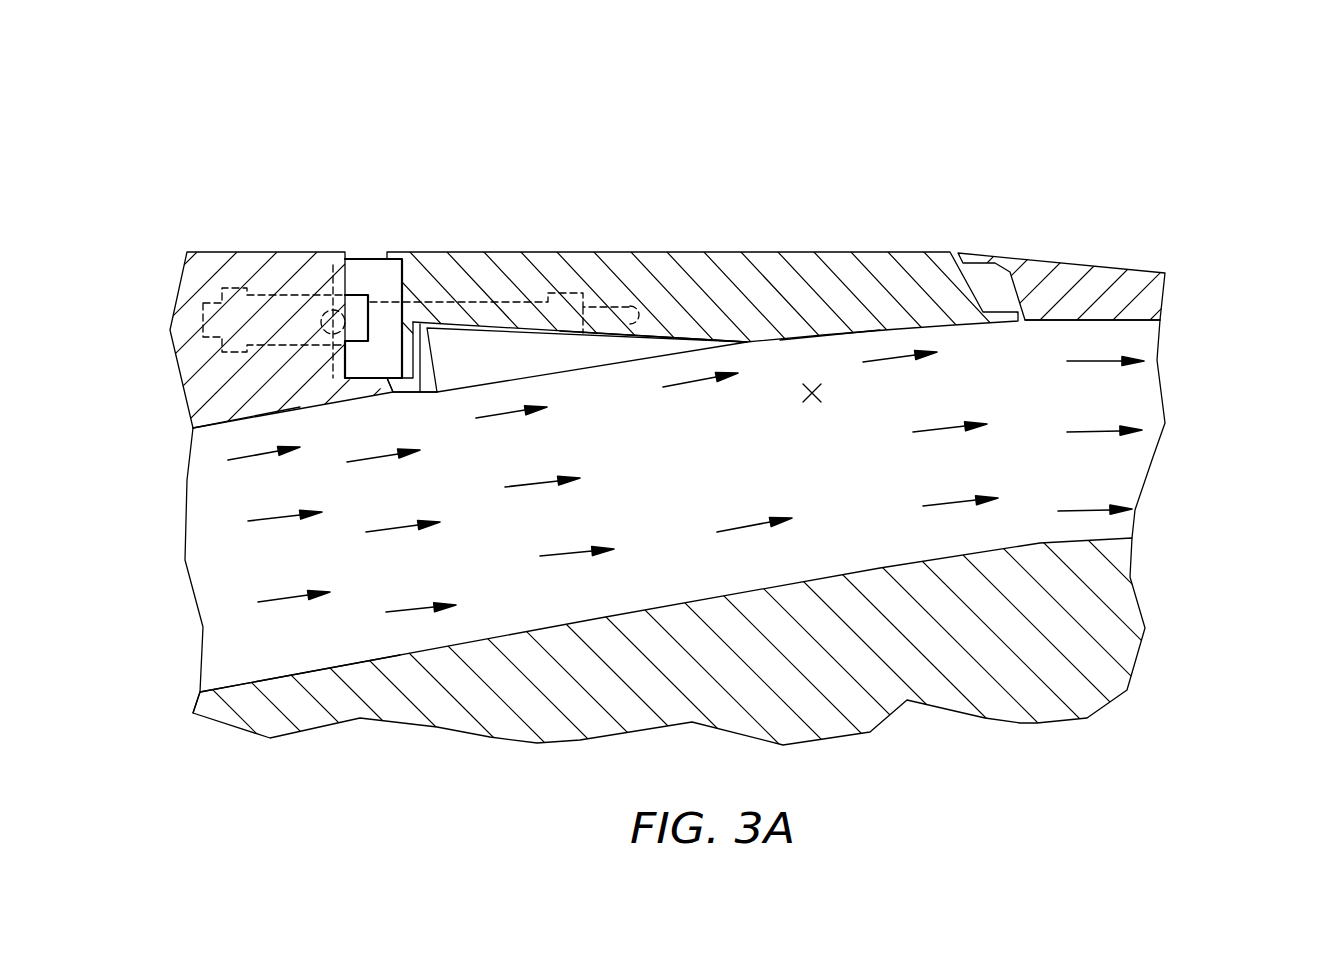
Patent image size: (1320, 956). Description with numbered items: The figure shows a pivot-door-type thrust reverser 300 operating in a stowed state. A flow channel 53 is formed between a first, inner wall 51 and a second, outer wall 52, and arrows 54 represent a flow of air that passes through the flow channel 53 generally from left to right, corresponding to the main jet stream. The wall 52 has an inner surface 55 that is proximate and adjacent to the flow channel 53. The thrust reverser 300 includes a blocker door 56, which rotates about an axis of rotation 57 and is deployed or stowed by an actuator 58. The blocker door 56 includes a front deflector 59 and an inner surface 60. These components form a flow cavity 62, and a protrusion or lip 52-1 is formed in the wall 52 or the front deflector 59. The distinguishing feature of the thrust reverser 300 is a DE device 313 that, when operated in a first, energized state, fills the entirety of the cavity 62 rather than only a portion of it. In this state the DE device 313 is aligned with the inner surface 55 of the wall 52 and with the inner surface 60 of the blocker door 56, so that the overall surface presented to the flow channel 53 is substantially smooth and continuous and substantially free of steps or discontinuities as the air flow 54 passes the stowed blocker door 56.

The thrust reverser 300 is at (1228, 178).
The first wall 51 is at (1123, 600).
The second wall 52 is at (209, 270).
The protrusion/lip 52-1 is at (433, 392).
The flow channel 53 is at (242, 632).
The flow of air 54 is at (258, 523).
The inner surface 55 is at (240, 411).
The blocker door 56 is at (635, 273).
The axis of rotation 57 is at (808, 402).
The actuator 58 is at (290, 283).
The front deflector 59 is at (393, 300).
The inner surface 60 is at (828, 335).
The flow cavity 62 is at (675, 343).
The DE device 313 is at (493, 343).